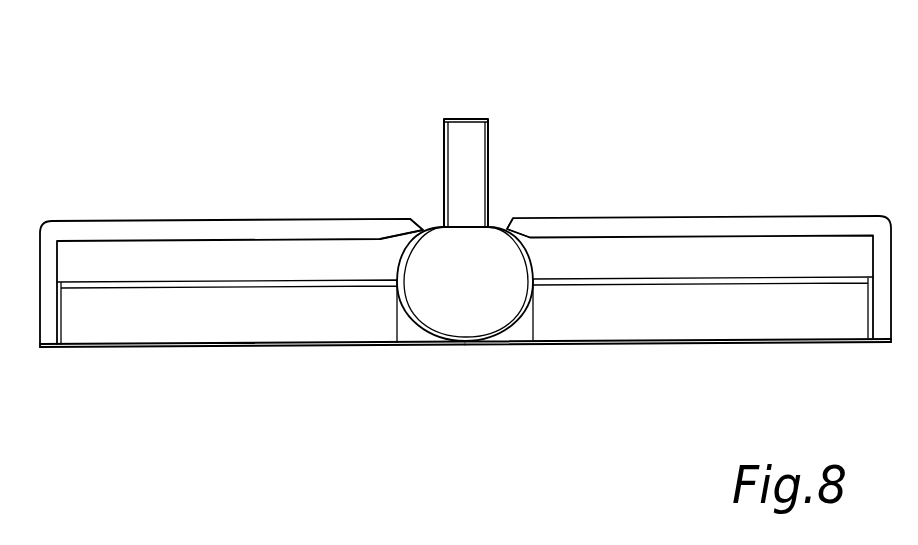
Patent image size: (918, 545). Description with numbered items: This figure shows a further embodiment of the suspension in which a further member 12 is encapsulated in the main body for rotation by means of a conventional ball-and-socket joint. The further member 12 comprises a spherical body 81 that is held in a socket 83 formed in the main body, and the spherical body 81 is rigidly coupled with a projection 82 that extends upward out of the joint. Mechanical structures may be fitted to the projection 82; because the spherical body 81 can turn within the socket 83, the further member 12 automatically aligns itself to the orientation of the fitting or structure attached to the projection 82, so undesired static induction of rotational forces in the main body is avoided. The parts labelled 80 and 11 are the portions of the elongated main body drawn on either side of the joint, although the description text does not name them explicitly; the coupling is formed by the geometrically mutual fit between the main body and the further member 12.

The support part 11 is at (760, 175).
The further member 12 is at (407, 112).
The holder part 80 is at (272, 178).
The spherical body 81 is at (493, 283).
The projection 82 is at (470, 150).
The socket 83 is at (422, 326).